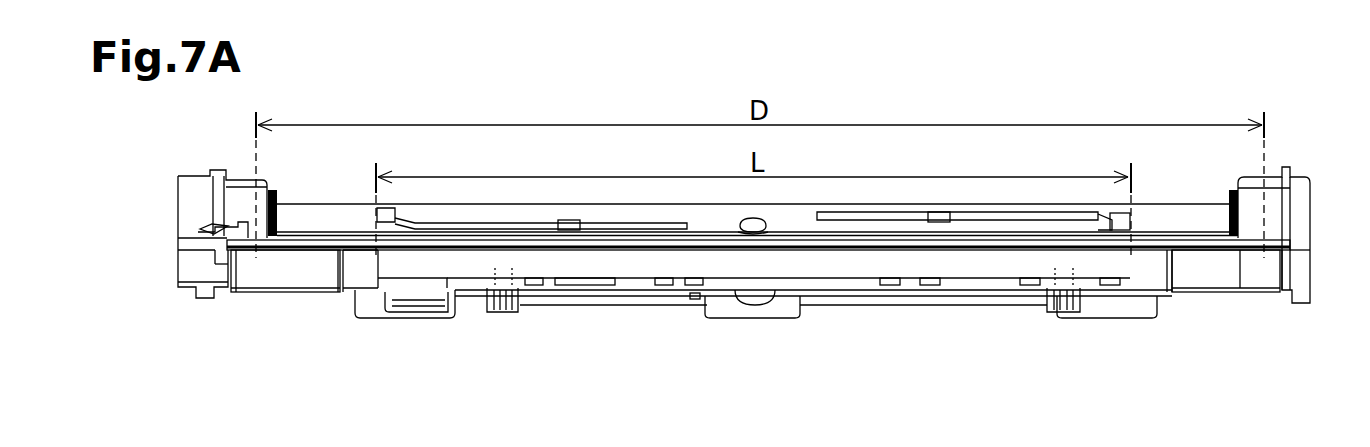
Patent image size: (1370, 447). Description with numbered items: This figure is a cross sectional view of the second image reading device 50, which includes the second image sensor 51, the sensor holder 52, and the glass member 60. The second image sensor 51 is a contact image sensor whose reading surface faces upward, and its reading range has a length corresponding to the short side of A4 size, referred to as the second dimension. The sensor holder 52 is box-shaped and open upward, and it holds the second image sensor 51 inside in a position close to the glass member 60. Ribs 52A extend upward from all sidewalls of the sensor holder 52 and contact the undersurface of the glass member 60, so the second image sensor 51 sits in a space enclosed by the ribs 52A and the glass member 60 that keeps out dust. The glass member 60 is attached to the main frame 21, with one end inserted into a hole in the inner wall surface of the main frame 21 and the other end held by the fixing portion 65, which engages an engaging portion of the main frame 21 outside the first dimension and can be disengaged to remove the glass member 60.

The main frame 21 is at (228, 207).
The fixing portion 65 is at (213, 232).
The second image sensor 51 is at (848, 268).
The sensor holder 52 is at (248, 294).
The ribs 52A is at (340, 268).
The glass member 60 is at (428, 247).
The second image reading device 50 is at (908, 298).